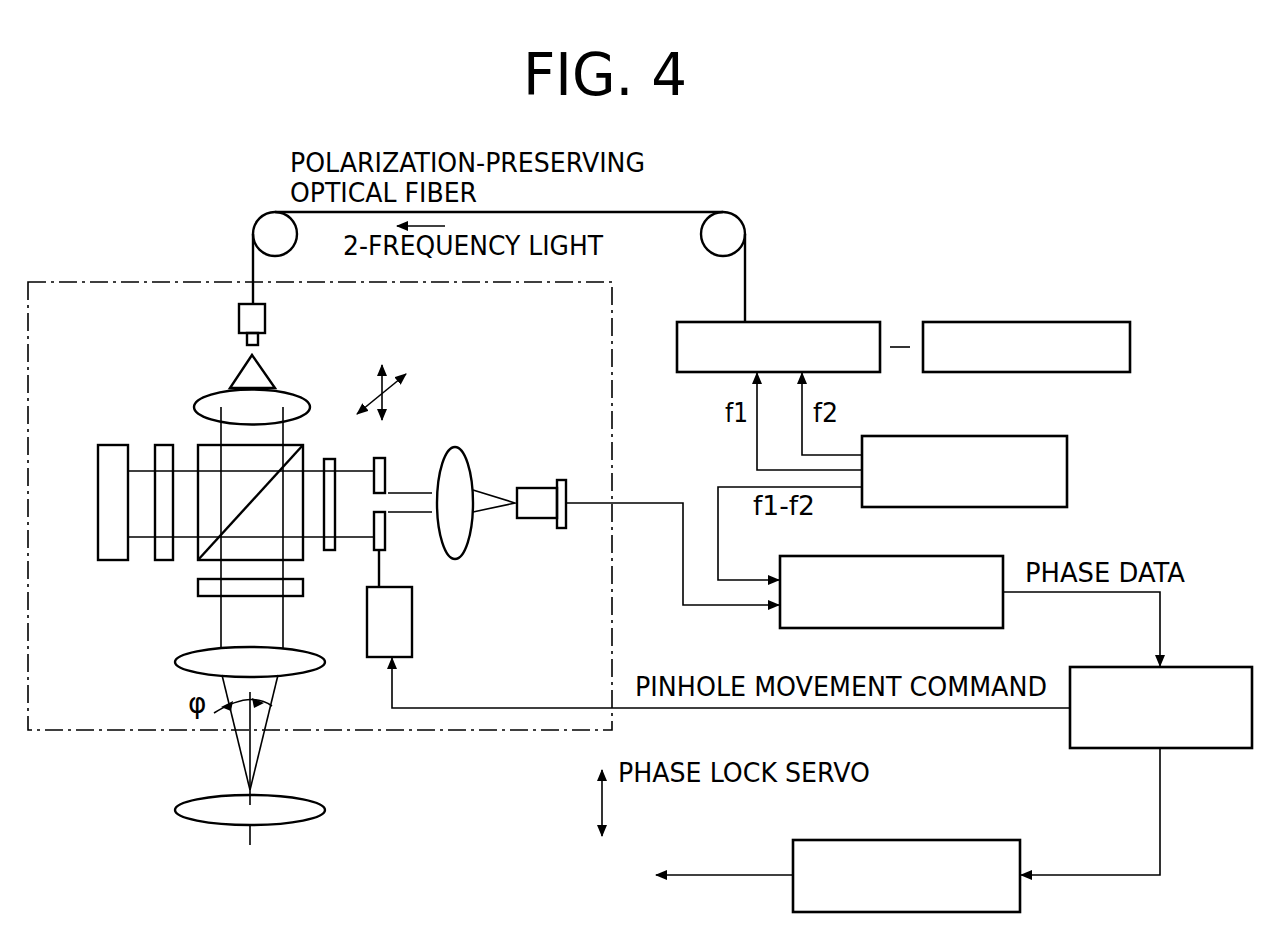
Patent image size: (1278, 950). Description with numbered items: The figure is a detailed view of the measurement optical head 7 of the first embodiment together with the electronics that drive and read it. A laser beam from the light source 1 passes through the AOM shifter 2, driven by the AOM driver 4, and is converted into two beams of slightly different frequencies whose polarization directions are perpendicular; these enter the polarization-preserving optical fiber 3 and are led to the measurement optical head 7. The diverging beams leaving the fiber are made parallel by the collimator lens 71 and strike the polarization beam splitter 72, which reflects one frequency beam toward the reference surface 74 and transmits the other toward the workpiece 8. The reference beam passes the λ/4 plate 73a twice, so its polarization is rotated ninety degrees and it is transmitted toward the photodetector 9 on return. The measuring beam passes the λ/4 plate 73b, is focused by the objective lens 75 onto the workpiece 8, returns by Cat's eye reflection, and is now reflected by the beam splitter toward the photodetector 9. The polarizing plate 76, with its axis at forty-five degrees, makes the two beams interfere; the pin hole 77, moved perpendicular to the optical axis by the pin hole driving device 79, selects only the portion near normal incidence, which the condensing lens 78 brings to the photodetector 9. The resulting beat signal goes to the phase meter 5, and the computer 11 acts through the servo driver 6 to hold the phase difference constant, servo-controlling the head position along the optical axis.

The light source 1 is at (1040, 322).
The AOM shifter 2 is at (813, 322).
The polarization-preserving optical fiber 3 is at (690, 211).
The AOM driver 4 is at (1070, 467).
The phase meter 5 is at (885, 556).
The servo driver 6 is at (920, 841).
The measurement optical head 7 is at (102, 273).
The workpiece 8 is at (175, 808).
The photodetector 9 is at (528, 488).
The computer 11 is at (1227, 667).
The collimator lens 71 is at (287, 390).
The polarization beam splitter 72 is at (303, 445).
The λ/4 plate 73a is at (165, 443).
The λ/4 plate 73b is at (293, 597).
The reference surface 74 is at (117, 443).
The objective lens 75 is at (178, 660).
The polarizing plate 76 is at (330, 553).
The pin hole 77 is at (387, 530).
The condensing lens 78 is at (455, 447).
The pin hole driving device 79 is at (412, 612).